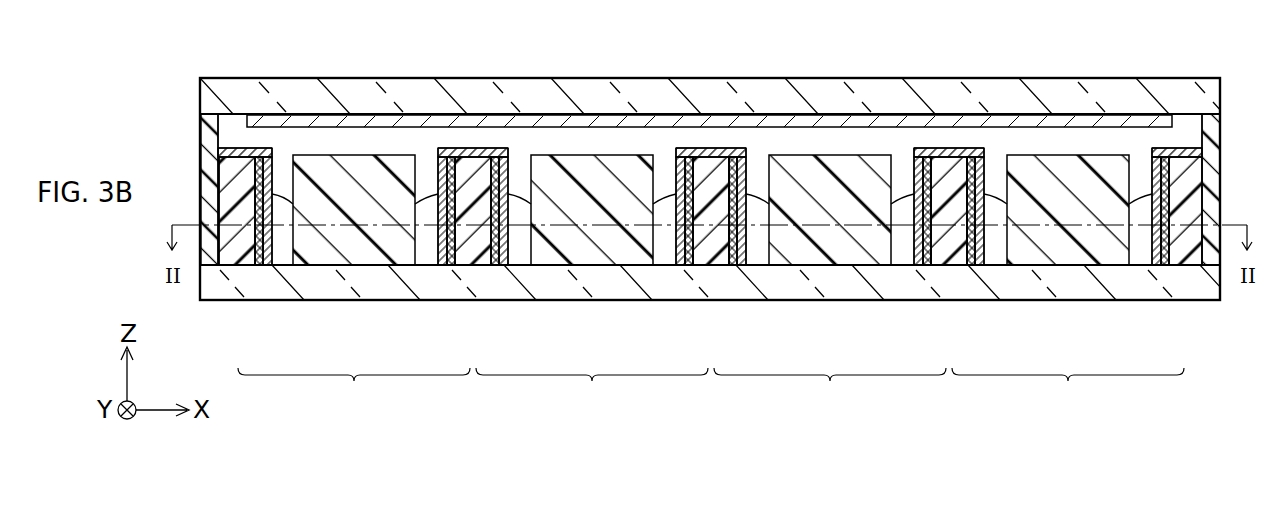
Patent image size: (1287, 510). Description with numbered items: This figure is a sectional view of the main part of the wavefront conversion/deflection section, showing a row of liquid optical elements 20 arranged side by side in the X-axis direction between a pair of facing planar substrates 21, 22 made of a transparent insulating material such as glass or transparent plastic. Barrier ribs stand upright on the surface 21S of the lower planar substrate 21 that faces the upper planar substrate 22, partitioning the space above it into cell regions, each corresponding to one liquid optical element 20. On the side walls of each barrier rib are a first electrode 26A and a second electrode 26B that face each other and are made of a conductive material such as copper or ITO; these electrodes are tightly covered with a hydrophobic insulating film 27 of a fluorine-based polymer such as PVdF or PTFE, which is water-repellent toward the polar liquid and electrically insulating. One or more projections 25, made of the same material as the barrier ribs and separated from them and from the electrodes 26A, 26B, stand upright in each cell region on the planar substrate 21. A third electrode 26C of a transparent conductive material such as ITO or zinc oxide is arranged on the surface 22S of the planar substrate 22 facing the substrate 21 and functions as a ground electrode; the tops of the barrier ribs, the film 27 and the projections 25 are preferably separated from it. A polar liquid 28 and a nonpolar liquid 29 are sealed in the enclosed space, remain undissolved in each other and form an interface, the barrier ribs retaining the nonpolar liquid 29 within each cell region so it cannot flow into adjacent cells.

The liquid optical element 20 is at (711, 392).
The planar substrate 21 is at (262, 292).
The surface 21S is at (1070, 264).
The planar substrate 22 is at (254, 88).
The surface 22S is at (1033, 116).
The projection 25 is at (830, 240).
The first electrode 26A is at (498, 256).
The second electrode 26B is at (692, 258).
The third electrode 26C is at (1117, 123).
The hydrophobic insulating film 27 is at (447, 258).
The polar liquid 28 is at (830, 140).
The nonpolar liquid 29 is at (904, 240).